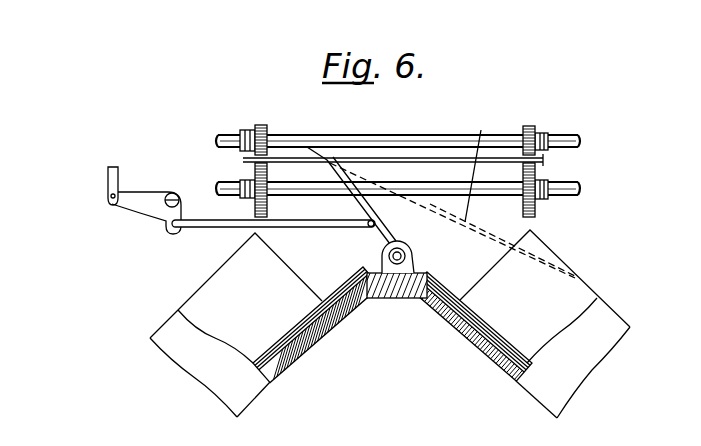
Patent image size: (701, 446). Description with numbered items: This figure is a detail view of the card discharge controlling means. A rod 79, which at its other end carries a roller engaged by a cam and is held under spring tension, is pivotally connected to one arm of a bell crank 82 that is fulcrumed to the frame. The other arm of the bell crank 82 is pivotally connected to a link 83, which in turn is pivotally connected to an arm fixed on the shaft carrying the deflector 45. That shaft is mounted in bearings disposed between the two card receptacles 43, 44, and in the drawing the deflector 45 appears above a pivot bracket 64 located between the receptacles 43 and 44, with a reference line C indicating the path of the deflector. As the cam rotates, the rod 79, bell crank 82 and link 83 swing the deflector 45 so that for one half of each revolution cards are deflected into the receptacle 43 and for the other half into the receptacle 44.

The rod 79 is at (107, 174).
The bell crank 82 is at (137, 205).
The link 83 is at (207, 224).
The deflector 45 is at (356, 203).
The pivot bracket 64 is at (397, 266).
The card receptacle 43 is at (265, 325).
The card receptacle 44 is at (520, 324).
The reference line C is at (471, 167).